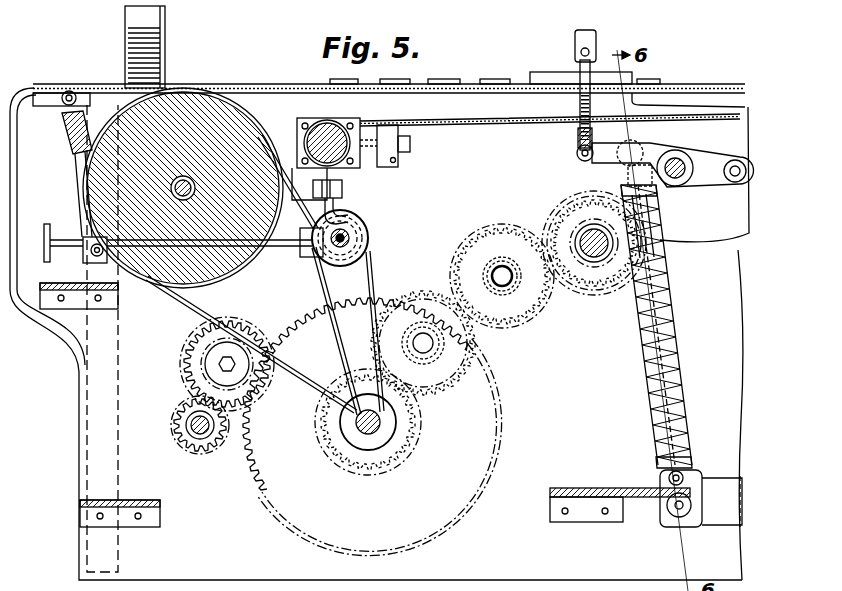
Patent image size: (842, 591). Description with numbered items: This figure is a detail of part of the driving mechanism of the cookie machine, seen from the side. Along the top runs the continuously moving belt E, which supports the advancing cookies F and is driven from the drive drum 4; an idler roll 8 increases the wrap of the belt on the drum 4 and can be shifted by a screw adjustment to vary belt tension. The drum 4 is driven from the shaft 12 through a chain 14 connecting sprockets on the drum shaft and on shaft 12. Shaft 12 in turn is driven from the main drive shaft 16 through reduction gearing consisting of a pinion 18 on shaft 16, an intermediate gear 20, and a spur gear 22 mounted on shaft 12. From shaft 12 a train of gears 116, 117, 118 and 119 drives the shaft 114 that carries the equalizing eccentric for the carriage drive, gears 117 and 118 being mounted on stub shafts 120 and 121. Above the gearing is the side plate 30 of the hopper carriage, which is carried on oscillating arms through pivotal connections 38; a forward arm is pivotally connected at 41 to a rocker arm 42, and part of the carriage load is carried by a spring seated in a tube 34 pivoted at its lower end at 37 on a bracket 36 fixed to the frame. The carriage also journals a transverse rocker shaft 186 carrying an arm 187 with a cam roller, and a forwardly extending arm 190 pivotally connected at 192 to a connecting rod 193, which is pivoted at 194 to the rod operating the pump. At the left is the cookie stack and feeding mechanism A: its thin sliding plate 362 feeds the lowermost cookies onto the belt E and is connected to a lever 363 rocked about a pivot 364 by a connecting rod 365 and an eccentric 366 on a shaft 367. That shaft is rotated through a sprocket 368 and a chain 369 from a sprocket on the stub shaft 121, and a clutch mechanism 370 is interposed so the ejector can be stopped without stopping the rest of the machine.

The drive drum 4 is at (248, 150).
The idler roll 8 is at (357, 125).
The shaft 12 is at (386, 432).
The chain 14 is at (190, 320).
The main drive shaft 16 is at (200, 434).
The pinion 18 is at (178, 413).
The intermediate gear 20 is at (184, 358).
The spur gear 22 is at (288, 333).
The side plate 30 is at (749, 107).
The tube 34 is at (668, 318).
The bracket 36 is at (625, 490).
The pivot 37 is at (690, 477).
The pivotal connection 38 is at (642, 150).
The pivot point 41 is at (673, 510).
The rocker arm 42 is at (721, 515).
The shaft 114 is at (597, 250).
The gear 116 is at (552, 215).
The gear 117 is at (518, 228).
The gear 118 is at (440, 292).
The gear 119 is at (416, 396).
The stub shaft 120 is at (502, 280).
The stub shaft 121 is at (423, 350).
The rocker shaft 186 is at (678, 160).
The arm 187 is at (708, 164).
The forwardly extending arm 190 is at (612, 150).
The pivot 192 is at (578, 149).
The connecting rod 193 is at (579, 60).
The pivot 194 is at (590, 50).
The sliding plate 362 is at (91, 82).
The lever 363 is at (65, 134).
The pivot 364 is at (72, 189).
The connecting rod 365 is at (285, 248).
The eccentric 366 is at (352, 220).
The shaft 367 is at (352, 265).
The sprocket 368 is at (385, 252).
The chain 369 is at (405, 268).
The clutch mechanism 370 is at (338, 200).
The cookie stack and feeding mechanism A is at (170, 40).
The belt E is at (684, 85).
The cookies F is at (330, 84).